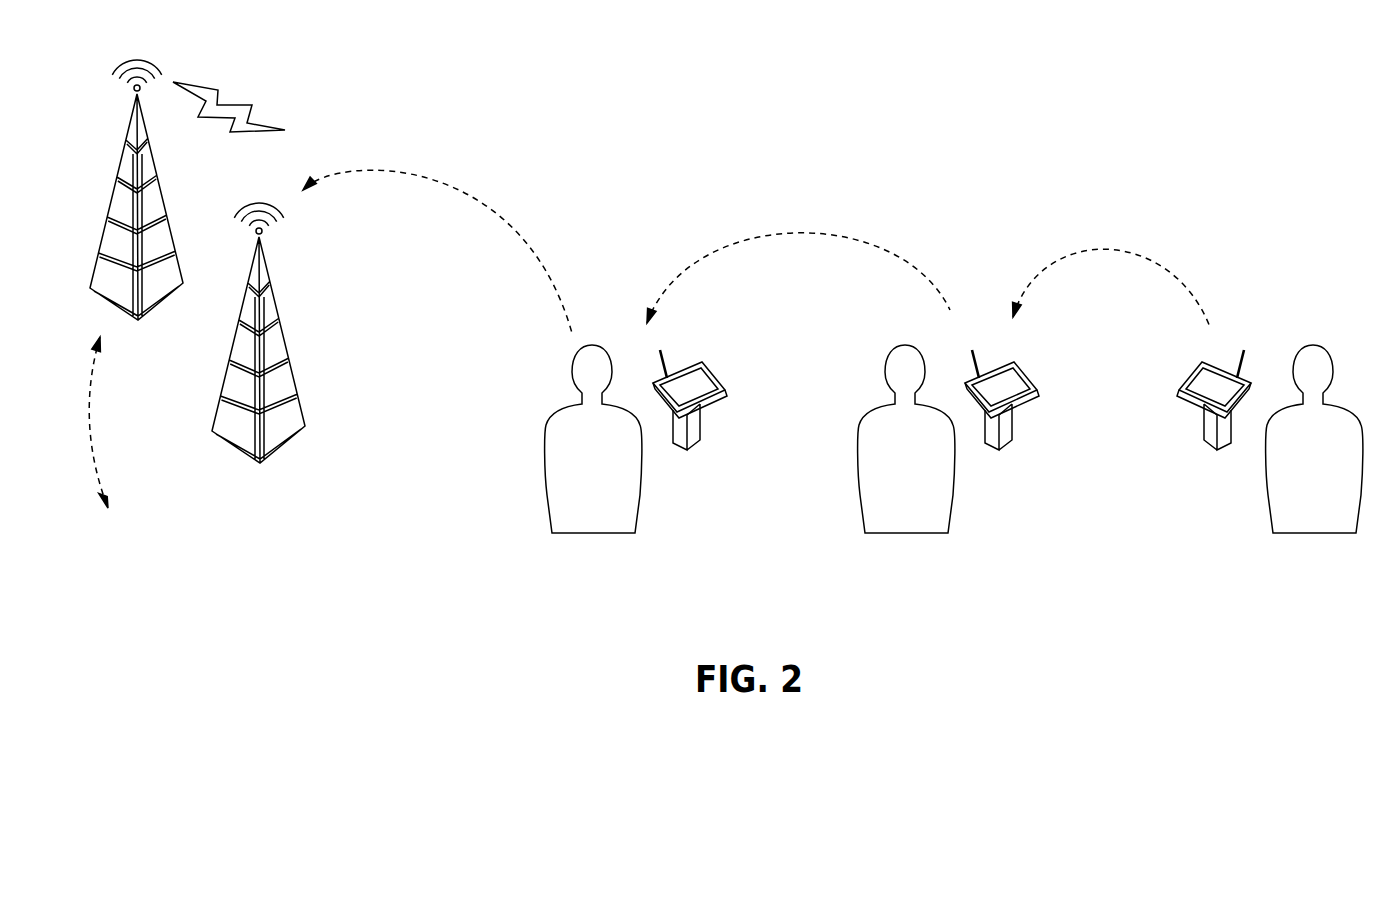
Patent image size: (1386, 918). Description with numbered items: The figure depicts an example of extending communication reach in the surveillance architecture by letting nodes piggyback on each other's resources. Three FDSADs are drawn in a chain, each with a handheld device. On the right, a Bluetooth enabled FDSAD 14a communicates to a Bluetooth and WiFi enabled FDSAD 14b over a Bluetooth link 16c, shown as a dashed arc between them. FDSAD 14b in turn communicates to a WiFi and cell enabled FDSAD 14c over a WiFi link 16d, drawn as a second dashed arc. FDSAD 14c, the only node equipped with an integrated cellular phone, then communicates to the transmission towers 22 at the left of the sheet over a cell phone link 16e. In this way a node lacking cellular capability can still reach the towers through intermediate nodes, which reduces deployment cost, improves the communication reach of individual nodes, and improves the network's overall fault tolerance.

The transmission towers 22 is at (150, 313).
The Bluetooth enabled FDSAD 14a is at (1233, 475).
The Bluetooth and WiFi enabled FDSAD 14b is at (835, 470).
The WiFi and cell enabled FDSAD 14c is at (530, 473).
The Bluetooth link 16c is at (1105, 245).
The WiFi link 16d is at (720, 245).
The cell phone link 16e is at (500, 228).